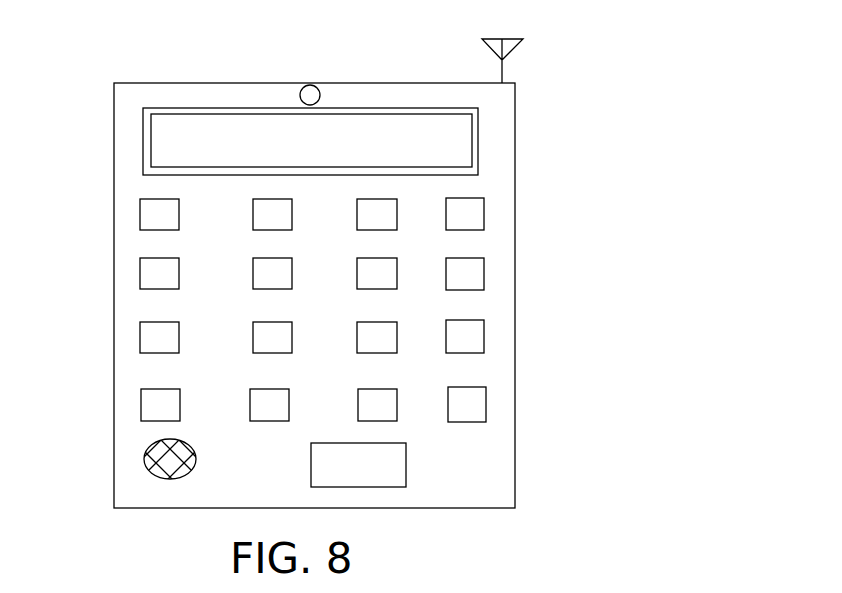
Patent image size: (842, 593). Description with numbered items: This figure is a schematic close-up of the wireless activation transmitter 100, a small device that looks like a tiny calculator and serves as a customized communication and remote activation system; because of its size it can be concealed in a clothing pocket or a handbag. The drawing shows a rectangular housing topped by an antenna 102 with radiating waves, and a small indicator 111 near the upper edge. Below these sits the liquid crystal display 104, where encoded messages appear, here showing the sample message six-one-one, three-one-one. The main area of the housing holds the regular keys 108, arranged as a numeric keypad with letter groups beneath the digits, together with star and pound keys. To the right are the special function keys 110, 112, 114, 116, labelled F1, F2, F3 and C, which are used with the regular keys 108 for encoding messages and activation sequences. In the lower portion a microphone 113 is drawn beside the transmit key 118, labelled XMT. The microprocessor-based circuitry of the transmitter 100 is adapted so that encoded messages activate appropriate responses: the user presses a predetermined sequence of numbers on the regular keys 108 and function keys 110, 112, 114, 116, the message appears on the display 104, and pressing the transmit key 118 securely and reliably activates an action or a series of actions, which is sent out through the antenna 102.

The wireless transmitter 100 is at (648, 128).
The antenna 102 is at (508, 28).
The display 104 is at (466, 135).
The regular keys 108 is at (142, 272).
The special function key 110 is at (480, 222).
The indicator light 111 is at (313, 85).
The special function key 112 is at (484, 268).
The microphone 113 is at (147, 458).
The special function key 114 is at (487, 330).
The special function key 116 is at (486, 397).
The transmit (XMT) key 118 is at (406, 462).